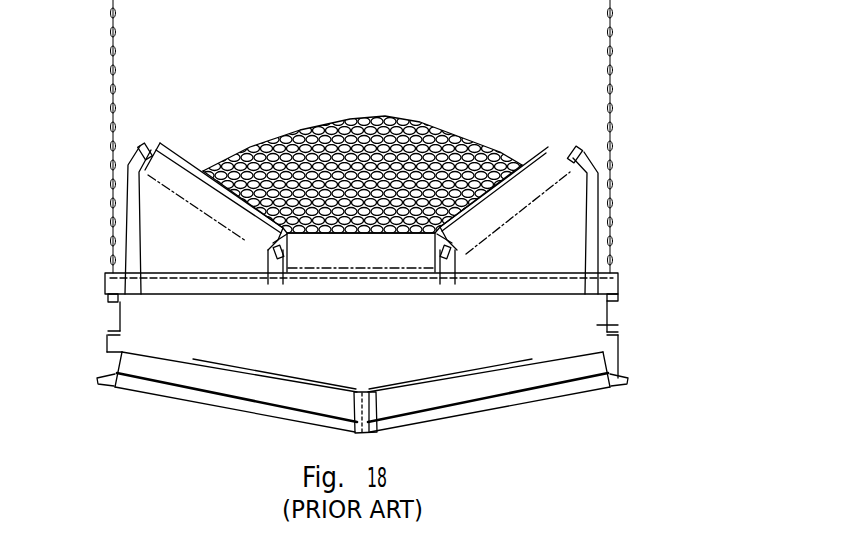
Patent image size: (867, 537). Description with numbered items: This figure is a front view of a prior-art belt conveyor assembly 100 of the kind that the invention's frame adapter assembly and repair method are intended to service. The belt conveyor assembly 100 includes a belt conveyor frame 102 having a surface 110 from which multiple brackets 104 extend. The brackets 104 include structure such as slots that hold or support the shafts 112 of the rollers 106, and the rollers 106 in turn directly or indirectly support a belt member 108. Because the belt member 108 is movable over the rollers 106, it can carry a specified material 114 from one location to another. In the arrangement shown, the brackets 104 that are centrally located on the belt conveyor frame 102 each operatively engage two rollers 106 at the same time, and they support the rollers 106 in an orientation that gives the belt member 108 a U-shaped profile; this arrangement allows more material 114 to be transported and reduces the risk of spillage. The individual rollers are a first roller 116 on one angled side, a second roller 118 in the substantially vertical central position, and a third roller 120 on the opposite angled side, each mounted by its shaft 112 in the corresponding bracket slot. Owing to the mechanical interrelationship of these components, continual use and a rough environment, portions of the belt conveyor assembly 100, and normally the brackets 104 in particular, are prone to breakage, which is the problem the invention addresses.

The belt conveyor assembly 100 is at (503, 87).
The belt conveyor frame 102 is at (547, 272).
The brackets 104 is at (129, 191).
The rollers 106 is at (558, 157).
The belt member 108 is at (199, 157).
The surface 110 is at (167, 272).
The shafts 112 is at (585, 170).
The material 114 is at (437, 136).
The first roller 116 is at (168, 172).
The second roller 118 is at (365, 248).
The third roller 120 is at (543, 173).